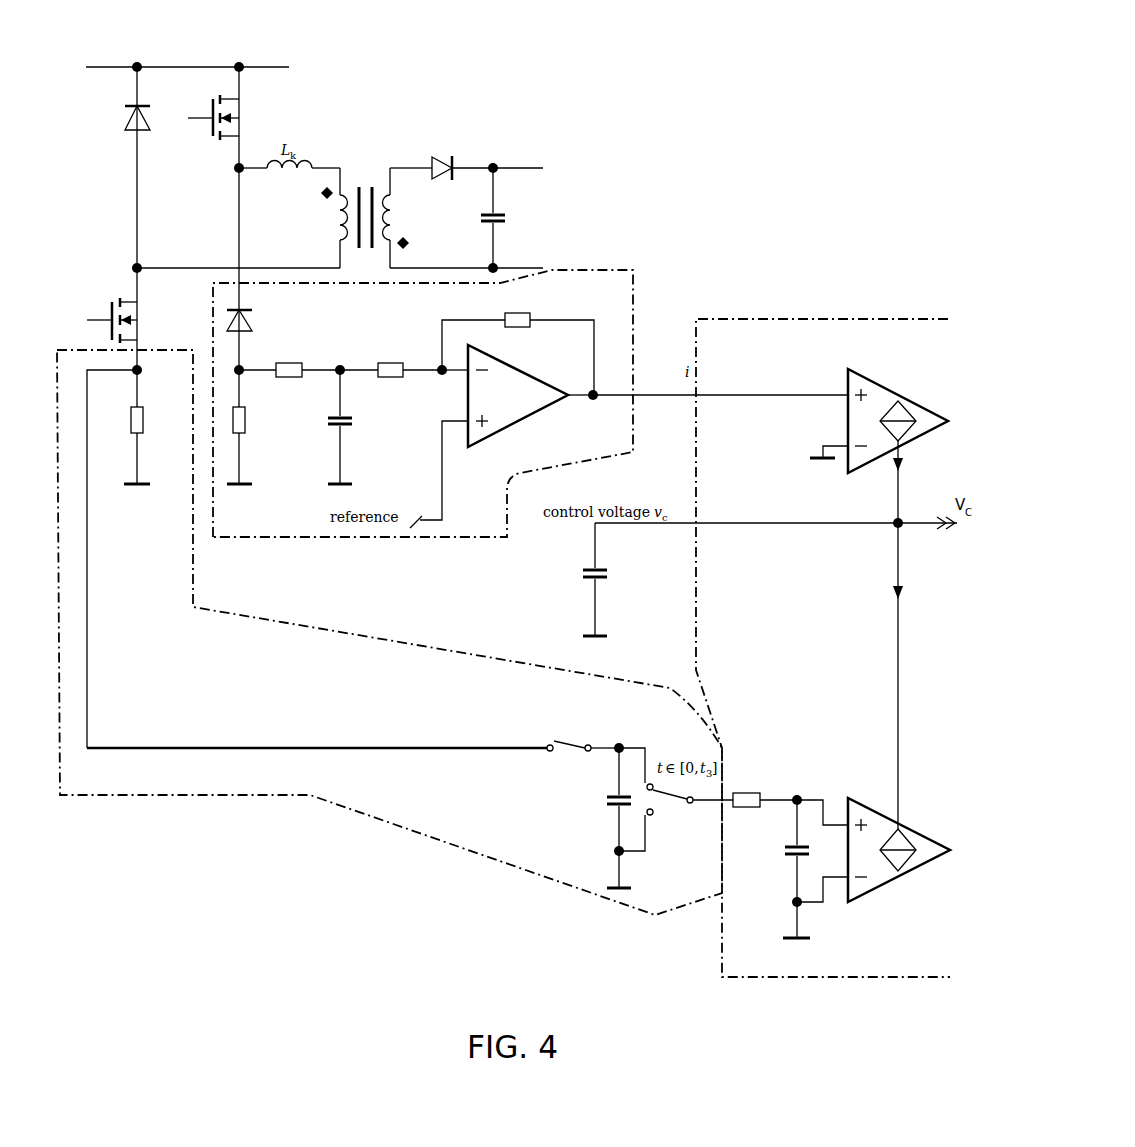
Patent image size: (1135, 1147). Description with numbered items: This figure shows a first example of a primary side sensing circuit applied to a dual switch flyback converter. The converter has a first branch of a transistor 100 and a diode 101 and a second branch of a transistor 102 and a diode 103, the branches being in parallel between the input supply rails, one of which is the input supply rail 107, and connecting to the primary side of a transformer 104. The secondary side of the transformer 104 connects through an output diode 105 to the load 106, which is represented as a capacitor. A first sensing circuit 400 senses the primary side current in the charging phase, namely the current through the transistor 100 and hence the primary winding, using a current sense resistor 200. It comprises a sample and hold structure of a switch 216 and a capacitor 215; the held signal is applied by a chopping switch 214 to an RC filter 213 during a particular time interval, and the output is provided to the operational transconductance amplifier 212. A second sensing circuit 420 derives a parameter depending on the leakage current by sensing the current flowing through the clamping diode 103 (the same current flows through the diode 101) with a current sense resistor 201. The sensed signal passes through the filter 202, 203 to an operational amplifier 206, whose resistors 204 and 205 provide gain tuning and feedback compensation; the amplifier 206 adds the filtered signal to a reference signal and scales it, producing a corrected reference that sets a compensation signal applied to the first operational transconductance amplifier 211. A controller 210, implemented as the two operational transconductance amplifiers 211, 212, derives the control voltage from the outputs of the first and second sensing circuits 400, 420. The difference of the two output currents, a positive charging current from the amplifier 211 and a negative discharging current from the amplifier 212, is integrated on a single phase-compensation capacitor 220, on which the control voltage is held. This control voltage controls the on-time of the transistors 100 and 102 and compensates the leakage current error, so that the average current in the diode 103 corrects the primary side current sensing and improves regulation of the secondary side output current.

The transistor 100 is at (143, 330).
The diode 101 is at (123, 118).
The transistor 102 is at (243, 137).
The diode 103 is at (253, 320).
The transformer 104 is at (364, 185).
The output diode 105 is at (453, 160).
The load 106 is at (506, 218).
The input supply rail 107 is at (163, 62).
The current sense resistor 200 is at (151, 430).
The current sense resistor 201 is at (252, 432).
The filter 202 is at (282, 361).
The filter 203 is at (352, 428).
The resistor 204 is at (391, 358).
The resistor 205 is at (518, 311).
The operational amplifier 206 is at (518, 402).
The controller 210 is at (696, 319).
The operational transconductance amplifier 211 is at (898, 388).
The operational transconductance amplifier 212 is at (848, 797).
The RC filter 213 is at (790, 843).
The chopping switch 214 is at (670, 813).
The capacitor 215 is at (606, 800).
The switch 216 is at (570, 736).
The capacitor 220 is at (608, 568).
The first sensing circuit 400 is at (425, 642).
The second sensing circuit 420 is at (637, 287).